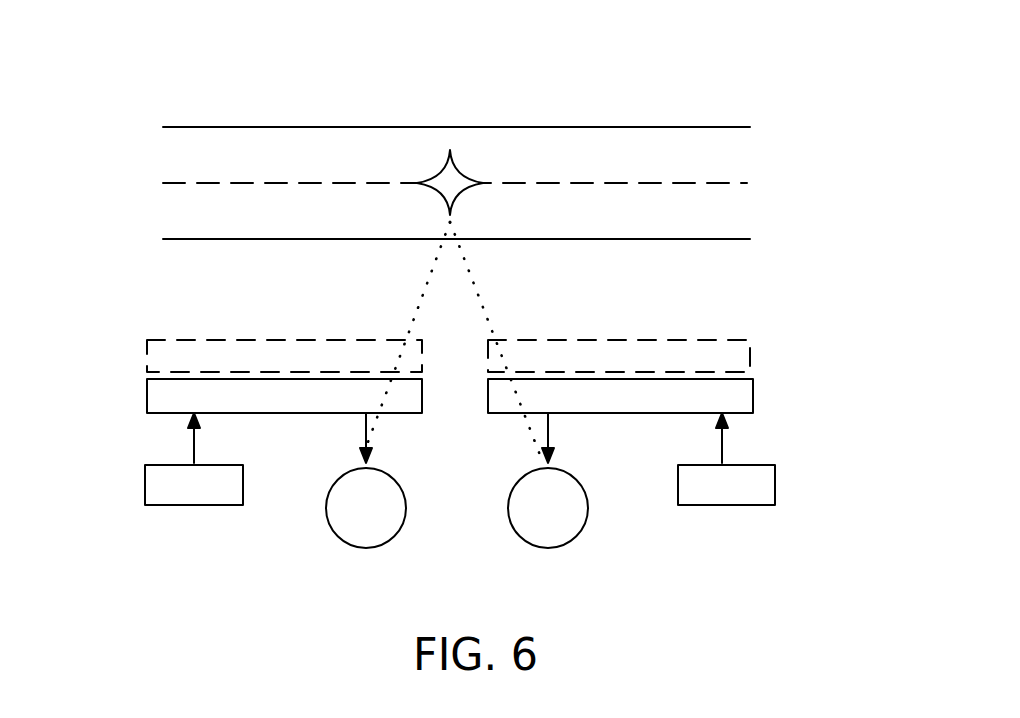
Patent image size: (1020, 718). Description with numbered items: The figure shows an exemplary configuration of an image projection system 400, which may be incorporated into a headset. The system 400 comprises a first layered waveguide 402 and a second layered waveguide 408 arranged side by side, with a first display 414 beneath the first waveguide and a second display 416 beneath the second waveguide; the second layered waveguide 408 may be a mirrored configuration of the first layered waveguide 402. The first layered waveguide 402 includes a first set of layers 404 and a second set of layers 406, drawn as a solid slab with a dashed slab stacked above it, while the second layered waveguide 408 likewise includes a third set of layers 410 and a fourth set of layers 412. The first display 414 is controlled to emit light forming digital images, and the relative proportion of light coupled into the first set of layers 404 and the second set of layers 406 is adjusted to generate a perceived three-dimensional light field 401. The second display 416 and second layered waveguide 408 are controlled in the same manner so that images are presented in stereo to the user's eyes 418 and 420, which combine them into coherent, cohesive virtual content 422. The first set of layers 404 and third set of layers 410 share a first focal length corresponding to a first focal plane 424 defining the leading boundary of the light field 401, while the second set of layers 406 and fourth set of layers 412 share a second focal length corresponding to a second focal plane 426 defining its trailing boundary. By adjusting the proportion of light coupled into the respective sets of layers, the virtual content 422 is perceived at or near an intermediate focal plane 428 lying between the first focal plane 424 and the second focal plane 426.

The image projection system 400 is at (240, 592).
The three-dimensional light field 401 is at (266, 95).
The first layered waveguide 402 is at (118, 420).
The first set of layers 404 is at (147, 397).
The second set of layers 406 is at (147, 357).
The second layered waveguide 408 is at (787, 425).
The third set of layers 410 is at (753, 400).
The fourth set of layers 412 is at (749, 355).
The first display 414 is at (160, 505).
The second display 416 is at (752, 505).
The user's eye 418 is at (375, 548).
The user's eye 420 is at (532, 547).
The virtual content 422 is at (437, 193).
The first focal plane 424 is at (742, 239).
The second focal plane 426 is at (742, 127).
The intermediate focal plane 428 is at (160, 183).